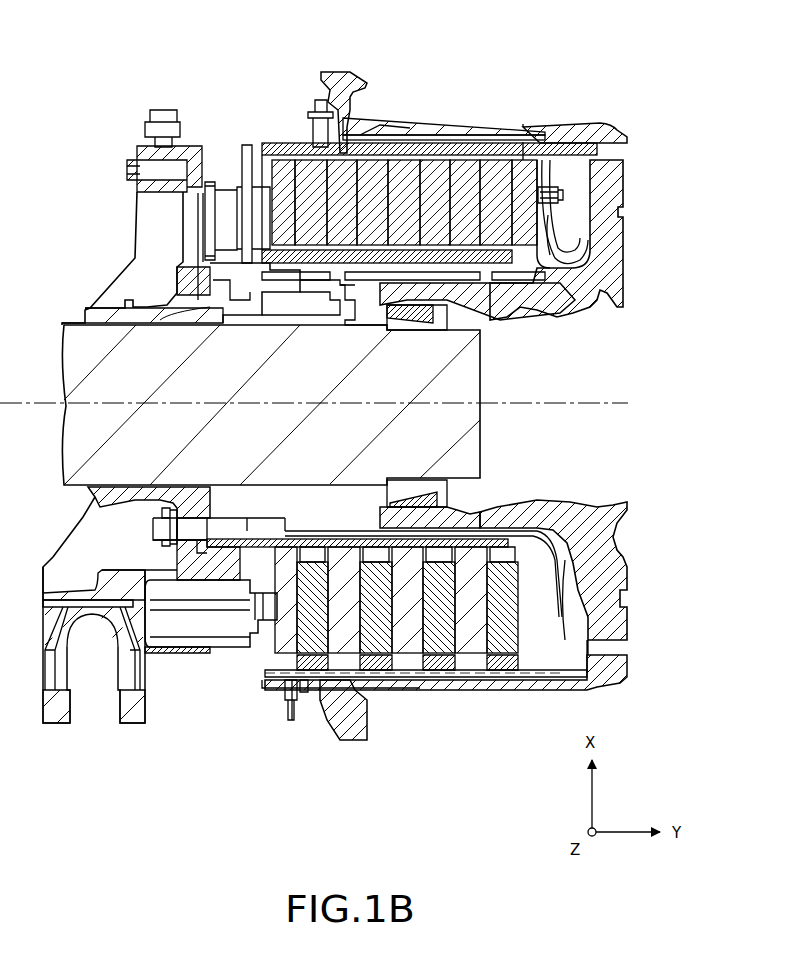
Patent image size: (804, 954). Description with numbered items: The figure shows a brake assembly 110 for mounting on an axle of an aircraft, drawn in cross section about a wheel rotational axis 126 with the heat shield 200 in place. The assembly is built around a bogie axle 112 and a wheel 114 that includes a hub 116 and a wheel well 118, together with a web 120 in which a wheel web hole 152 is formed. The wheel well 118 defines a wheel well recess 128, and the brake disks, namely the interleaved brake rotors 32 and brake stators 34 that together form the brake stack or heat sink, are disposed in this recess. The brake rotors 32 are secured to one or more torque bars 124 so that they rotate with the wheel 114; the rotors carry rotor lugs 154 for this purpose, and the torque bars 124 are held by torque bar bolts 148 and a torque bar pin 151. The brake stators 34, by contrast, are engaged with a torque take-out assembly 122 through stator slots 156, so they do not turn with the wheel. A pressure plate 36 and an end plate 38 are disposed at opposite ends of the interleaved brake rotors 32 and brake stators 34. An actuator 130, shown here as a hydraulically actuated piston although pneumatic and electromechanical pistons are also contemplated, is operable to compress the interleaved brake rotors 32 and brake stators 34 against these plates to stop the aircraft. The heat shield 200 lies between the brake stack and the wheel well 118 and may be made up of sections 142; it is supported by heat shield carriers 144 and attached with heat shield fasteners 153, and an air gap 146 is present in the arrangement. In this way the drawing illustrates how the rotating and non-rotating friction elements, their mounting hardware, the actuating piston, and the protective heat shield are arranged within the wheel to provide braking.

The brake assembly 110 is at (635, 75).
The bogie axle 112 is at (52, 366).
The wheel 114 is at (500, 108).
The hub 116 is at (462, 305).
The wheel well 118 is at (610, 135).
The web 120 is at (608, 578).
The torque take-out assembly 122 is at (290, 290).
The torque bar 124 is at (270, 150).
The wheel rotational axis 126 is at (540, 403).
The wheel well recess 128 is at (575, 200).
The actuator 130 is at (190, 670).
The heat shield section 142 is at (444, 134).
The heat shield carrier 144 is at (340, 705).
The air gap 146 is at (350, 145).
The torque bar bolt 148 is at (318, 135).
The torque bar pin 151 is at (575, 170).
The wheel web hole 152 is at (620, 165).
The heat shield fastener 153 is at (318, 700).
The rotor lug 154 is at (382, 155).
The stator slot 156 is at (318, 282).
The heat shield 200 is at (272, 705).
The brake rotor 32 is at (406, 415).
The brake stator 34 is at (381, 406).
The pressure plate 36 is at (283, 202).
The end plate 38 is at (524, 202).